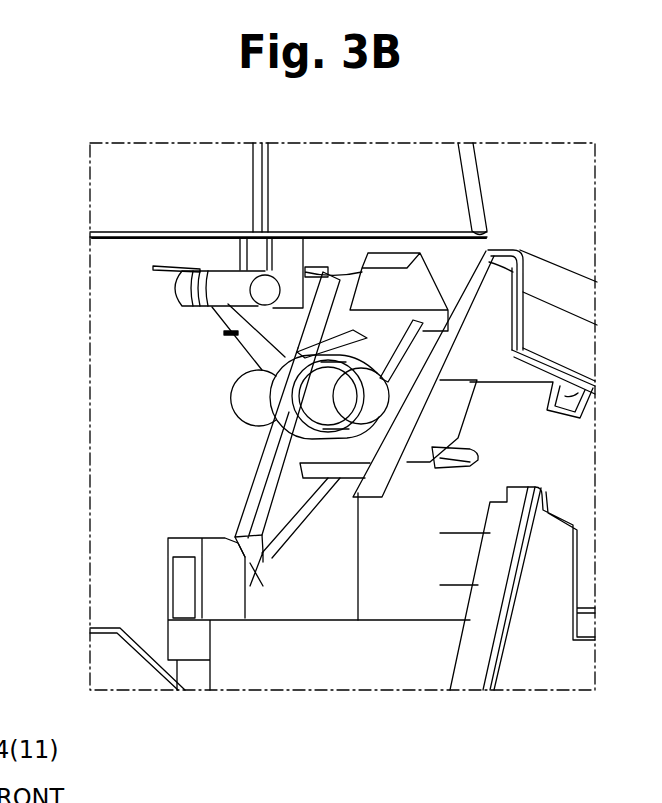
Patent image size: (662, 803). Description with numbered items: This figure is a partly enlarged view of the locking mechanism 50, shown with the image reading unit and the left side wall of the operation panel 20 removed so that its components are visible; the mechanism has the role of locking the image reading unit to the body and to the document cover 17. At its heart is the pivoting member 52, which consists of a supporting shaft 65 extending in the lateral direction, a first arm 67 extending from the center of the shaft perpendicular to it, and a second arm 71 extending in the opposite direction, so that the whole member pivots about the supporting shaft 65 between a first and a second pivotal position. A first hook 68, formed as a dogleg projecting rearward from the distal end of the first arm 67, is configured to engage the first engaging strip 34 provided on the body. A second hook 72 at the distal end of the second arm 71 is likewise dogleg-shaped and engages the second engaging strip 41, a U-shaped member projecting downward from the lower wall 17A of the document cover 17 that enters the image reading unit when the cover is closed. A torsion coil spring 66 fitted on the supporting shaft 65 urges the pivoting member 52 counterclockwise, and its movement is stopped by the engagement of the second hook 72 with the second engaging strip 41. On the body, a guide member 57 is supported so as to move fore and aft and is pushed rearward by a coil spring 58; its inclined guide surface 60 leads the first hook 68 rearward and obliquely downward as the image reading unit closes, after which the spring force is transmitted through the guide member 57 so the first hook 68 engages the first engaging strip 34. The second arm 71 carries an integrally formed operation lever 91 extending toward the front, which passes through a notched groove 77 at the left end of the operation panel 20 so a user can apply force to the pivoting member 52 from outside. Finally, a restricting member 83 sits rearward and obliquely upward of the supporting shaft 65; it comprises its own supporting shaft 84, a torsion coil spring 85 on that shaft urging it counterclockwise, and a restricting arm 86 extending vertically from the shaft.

The document cover 17 is at (482, 183).
The lower wall 17A is at (107, 251).
The operation panel 20 is at (545, 262).
The first engaging strip 34 is at (220, 600).
The second engaging strip 41 is at (240, 250).
The locking mechanism 50 is at (200, 432).
The pivoting member 52 is at (242, 485).
The guide member 57 is at (337, 597).
The coil spring 58 is at (400, 585).
The guide surface 60 is at (299, 525).
The supporting shaft 65 is at (230, 396).
The torsion coil spring 66 is at (283, 415).
The first arm 67 is at (243, 528).
The first hook 68 is at (258, 565).
The second arm 71 is at (325, 312).
The second hook 72 is at (312, 270).
The notched groove 77 is at (437, 272).
The restricting member 83 is at (172, 320).
The supporting shaft 84 is at (173, 287).
The torsion coil spring 85 is at (193, 267).
The restricting arm 86 is at (233, 334).
The operation lever 91 is at (398, 310).